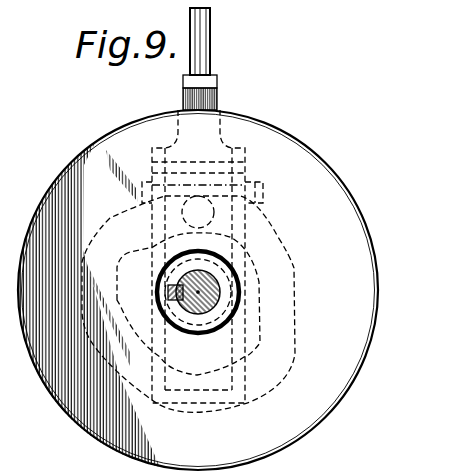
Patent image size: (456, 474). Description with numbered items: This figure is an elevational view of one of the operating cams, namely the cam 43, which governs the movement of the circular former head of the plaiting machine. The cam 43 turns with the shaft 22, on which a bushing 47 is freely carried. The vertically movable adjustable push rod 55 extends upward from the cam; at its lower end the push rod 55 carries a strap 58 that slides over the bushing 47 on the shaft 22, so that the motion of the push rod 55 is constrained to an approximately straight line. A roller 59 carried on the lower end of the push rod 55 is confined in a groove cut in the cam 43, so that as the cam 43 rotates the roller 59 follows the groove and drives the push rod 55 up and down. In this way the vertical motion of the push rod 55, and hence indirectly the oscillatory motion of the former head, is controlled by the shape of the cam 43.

The cam 43 is at (198, 284).
The push rod 55 is at (211, 40).
The strap 58 is at (246, 152).
The roller 59 is at (216, 214).
The bushing 47 is at (200, 325).
The shaft 22 is at (205, 296).